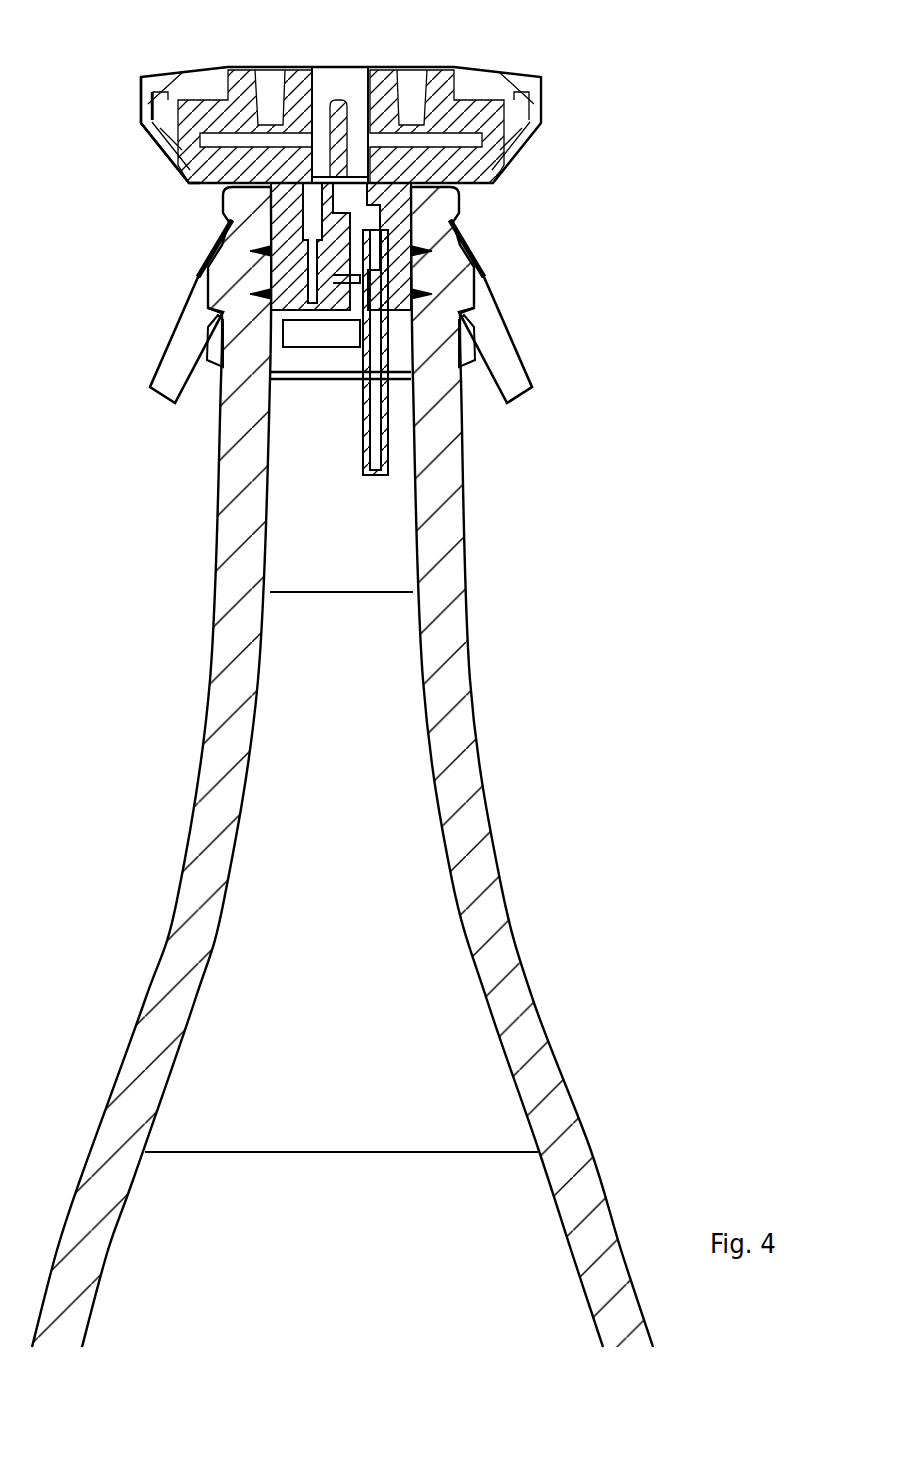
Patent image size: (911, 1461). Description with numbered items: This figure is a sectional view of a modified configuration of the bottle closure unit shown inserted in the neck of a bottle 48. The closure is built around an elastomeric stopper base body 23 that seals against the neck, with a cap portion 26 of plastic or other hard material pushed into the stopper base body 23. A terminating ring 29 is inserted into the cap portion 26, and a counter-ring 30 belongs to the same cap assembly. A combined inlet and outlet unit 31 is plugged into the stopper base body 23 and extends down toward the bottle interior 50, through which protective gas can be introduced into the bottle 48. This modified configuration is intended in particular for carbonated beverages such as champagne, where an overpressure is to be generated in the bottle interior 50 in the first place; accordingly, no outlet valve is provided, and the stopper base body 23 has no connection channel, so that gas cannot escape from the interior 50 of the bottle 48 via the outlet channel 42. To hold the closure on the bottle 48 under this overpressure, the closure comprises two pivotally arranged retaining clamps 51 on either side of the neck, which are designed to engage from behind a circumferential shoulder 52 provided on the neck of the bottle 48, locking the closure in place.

The stopper base body 23 is at (397, 190).
The cap portion 26 is at (512, 83).
The terminating ring 29 is at (241, 80).
The counter-ring 30 is at (178, 147).
The combined inlet and outlet unit 31 is at (395, 345).
The outlet channel 42 is at (305, 208).
The bottle 48 is at (445, 632).
The bottle interior 50 is at (364, 826).
The retaining clamps 51 is at (165, 363).
The circumferential shoulder 52 is at (208, 313).